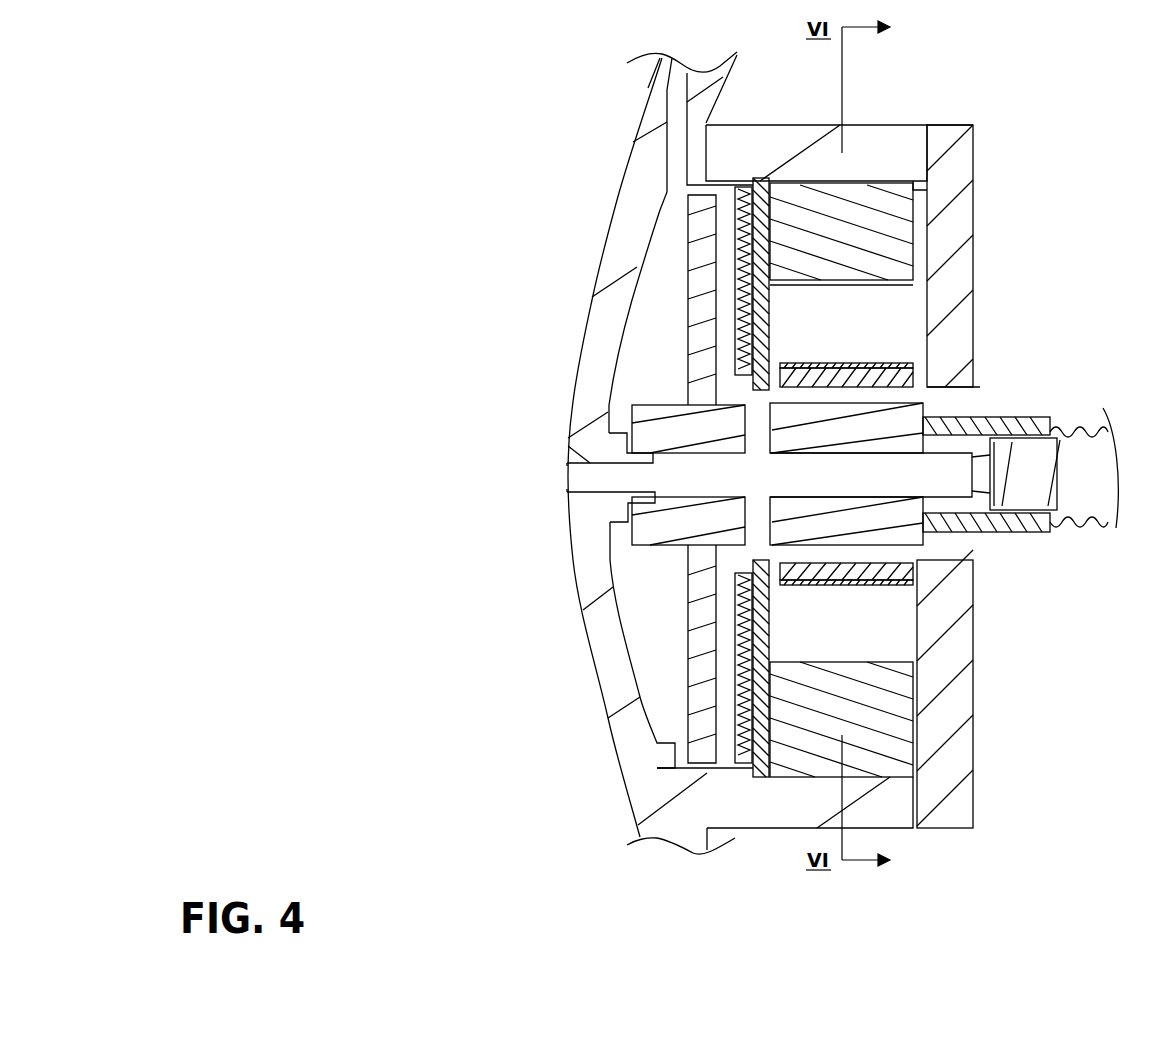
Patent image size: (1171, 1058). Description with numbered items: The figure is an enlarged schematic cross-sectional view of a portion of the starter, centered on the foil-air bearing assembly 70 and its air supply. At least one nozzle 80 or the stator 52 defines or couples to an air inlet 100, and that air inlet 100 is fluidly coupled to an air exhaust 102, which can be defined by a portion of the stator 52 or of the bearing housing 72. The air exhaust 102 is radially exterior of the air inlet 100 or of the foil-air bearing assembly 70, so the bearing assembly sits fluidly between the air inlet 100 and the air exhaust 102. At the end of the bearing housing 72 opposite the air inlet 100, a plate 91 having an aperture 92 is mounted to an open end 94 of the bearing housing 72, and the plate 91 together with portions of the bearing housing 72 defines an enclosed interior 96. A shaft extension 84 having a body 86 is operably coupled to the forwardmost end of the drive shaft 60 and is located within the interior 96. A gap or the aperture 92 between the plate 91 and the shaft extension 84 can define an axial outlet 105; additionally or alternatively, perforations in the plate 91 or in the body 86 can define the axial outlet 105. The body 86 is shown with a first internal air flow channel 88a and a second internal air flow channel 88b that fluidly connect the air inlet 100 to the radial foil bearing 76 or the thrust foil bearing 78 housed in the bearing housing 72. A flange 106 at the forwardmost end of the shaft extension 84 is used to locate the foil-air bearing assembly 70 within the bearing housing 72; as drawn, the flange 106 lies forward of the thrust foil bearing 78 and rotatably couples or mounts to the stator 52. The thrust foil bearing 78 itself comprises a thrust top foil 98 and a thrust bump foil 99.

The stator 52 is at (602, 744).
The drive shaft 60 is at (1057, 437).
The foil-air bearing assembly 70 is at (777, 119).
The bearing housing 72 is at (902, 832).
The radial foil bearing 76 is at (863, 278).
The thrust foil bearing 78 is at (727, 742).
The nozzle 80 is at (558, 477).
The shaft extension 84 is at (1013, 410).
The body 86 is at (993, 550).
The first internal air flow channel 88a is at (680, 497).
The second internal air flow channel 88b is at (745, 427).
The plate 91 is at (977, 244).
The aperture 92 is at (978, 562).
The open end 94 is at (928, 158).
The enclosed interior 96 is at (998, 533).
The thrust top foil 98 is at (750, 190).
The thrust bump foil 99 is at (741, 183).
The air inlet 100 is at (590, 463).
The air exhaust 102 is at (655, 155).
The axial outlet 105 is at (975, 389).
The flange 106 is at (688, 500).